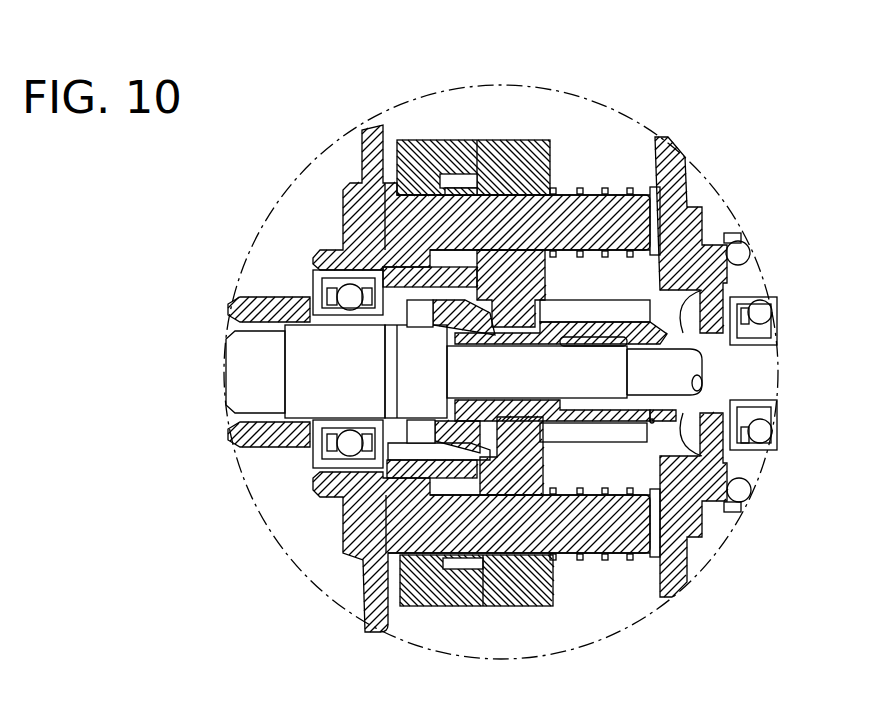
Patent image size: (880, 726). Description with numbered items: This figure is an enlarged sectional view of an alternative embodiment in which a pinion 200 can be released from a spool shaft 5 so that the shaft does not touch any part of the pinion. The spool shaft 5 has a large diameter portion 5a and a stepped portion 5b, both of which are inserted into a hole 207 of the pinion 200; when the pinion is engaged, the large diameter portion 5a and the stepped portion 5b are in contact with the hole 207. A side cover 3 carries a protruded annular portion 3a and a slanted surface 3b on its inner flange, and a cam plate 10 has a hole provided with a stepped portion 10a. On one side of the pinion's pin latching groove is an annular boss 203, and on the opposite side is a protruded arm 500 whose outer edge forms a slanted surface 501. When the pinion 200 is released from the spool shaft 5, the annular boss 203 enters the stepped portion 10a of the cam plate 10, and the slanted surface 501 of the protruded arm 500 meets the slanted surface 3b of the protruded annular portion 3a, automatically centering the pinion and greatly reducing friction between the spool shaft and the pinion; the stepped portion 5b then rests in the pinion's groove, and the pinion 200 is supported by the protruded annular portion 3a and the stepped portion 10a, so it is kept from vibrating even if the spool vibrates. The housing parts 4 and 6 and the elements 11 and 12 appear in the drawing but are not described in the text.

The side cover 3 is at (690, 155).
The protruded annular portion 3a is at (738, 297).
The slanted surface 3b is at (724, 232).
The bearing housing 4 is at (237, 298).
The spool shaft 5 is at (313, 372).
The large diameter portion 5a is at (490, 373).
The stepped portion 5b is at (647, 382).
The bearing 6 is at (420, 428).
The cam plate 10 is at (460, 185).
The stepped portion 10a is at (438, 268).
The stator 11 is at (508, 168).
The rotor 12 is at (585, 183).
The pinion 200 is at (610, 272).
The annular boss 203 is at (430, 262).
The hole 207 is at (480, 343).
The protruded arm 500 is at (652, 422).
The slanted surface 501 is at (657, 418).